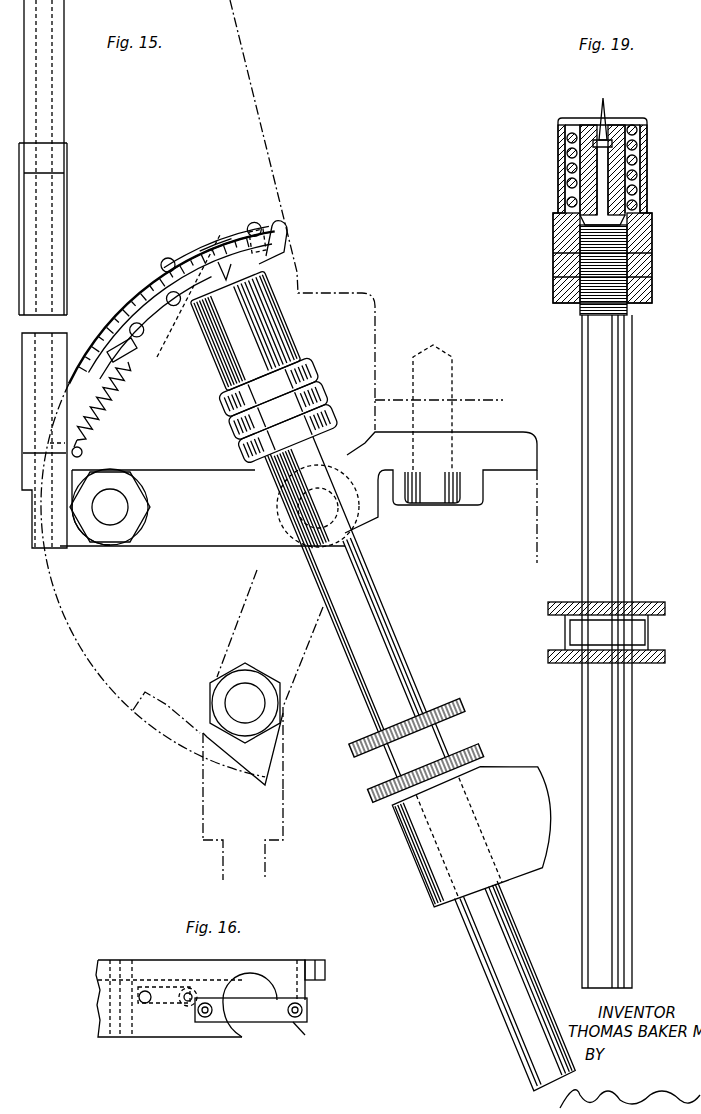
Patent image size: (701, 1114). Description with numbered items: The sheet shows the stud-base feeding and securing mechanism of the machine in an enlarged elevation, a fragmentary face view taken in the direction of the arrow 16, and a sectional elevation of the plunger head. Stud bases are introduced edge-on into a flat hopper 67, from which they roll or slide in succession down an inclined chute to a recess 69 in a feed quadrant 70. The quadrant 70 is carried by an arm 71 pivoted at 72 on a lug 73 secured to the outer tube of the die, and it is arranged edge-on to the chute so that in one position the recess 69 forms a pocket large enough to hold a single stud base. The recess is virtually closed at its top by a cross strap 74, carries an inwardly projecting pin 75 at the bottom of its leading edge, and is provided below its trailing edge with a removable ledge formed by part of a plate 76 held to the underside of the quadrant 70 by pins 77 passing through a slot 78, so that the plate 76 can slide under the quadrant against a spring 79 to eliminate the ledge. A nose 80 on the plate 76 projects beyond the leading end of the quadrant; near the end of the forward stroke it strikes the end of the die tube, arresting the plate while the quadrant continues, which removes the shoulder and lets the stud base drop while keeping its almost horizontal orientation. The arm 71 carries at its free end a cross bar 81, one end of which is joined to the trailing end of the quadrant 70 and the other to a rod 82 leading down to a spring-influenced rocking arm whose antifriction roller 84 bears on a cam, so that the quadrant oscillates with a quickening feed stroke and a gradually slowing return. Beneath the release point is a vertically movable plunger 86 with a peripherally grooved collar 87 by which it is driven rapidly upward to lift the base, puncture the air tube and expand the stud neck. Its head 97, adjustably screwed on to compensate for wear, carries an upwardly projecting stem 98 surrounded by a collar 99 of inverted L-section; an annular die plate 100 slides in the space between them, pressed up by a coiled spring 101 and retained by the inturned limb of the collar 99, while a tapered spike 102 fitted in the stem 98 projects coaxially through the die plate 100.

In FIG. 15, the arrow 16 is at (198, 205).
In FIG. 15, the flat hopper 67 is at (65, 19).
In FIG. 15, the recess 69 is at (226, 248).
In FIG. 16, the recess 69 is at (250, 990).
In FIG. 15, the feed quadrant 70 is at (143, 292).
In FIG. 16, the feed quadrant 70 is at (230, 965).
In FIG. 15, the arm 71 is at (207, 530).
In FIG. 15, the pivot 72 is at (263, 543).
In FIG. 15, the lug 73 is at (367, 517).
In FIG. 15, the cross strap 74 is at (219, 246).
In FIG. 16, the cross strap 74 is at (255, 1012).
In FIG. 15, the inwardly projecting pin 75 is at (266, 233).
In FIG. 16, the inwardly projecting pin 75 is at (298, 960).
In FIG. 15, the plate 76 is at (194, 296).
In FIG. 16, the plate 76 is at (243, 1026).
In FIG. 15, the pins 77 is at (140, 338).
In FIG. 16, the pins 77 is at (187, 1003).
In FIG. 16, the slot 78 is at (172, 987).
In FIG. 15, the spring 79 is at (105, 414).
In FIG. 15, the nose 80 is at (287, 231).
In FIG. 16, the nose 80 is at (325, 966).
In FIG. 15, the cross bar 81 is at (112, 522).
In FIG. 15, the rod 82 is at (266, 868).
In FIG. 19, the antifriction roller 84 is at (548, 606).
In FIG. 15, the plunger 86 is at (375, 626).
In FIG. 19, the plunger 86 is at (605, 381).
In FIG. 15, the peripherally grooved collar 87 is at (445, 700).
In FIG. 19, the head 97 is at (630, 235).
In FIG. 19, the stem 98 is at (583, 195).
In FIG. 19, the collar 99 is at (565, 145).
In FIG. 19, the annular die plate 100 is at (625, 122).
In FIG. 19, the coiled spring 101 is at (645, 162).
In FIG. 19, the tapered spike 102 is at (604, 112).